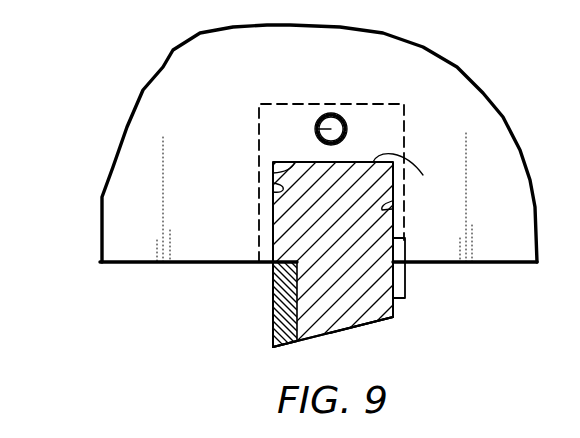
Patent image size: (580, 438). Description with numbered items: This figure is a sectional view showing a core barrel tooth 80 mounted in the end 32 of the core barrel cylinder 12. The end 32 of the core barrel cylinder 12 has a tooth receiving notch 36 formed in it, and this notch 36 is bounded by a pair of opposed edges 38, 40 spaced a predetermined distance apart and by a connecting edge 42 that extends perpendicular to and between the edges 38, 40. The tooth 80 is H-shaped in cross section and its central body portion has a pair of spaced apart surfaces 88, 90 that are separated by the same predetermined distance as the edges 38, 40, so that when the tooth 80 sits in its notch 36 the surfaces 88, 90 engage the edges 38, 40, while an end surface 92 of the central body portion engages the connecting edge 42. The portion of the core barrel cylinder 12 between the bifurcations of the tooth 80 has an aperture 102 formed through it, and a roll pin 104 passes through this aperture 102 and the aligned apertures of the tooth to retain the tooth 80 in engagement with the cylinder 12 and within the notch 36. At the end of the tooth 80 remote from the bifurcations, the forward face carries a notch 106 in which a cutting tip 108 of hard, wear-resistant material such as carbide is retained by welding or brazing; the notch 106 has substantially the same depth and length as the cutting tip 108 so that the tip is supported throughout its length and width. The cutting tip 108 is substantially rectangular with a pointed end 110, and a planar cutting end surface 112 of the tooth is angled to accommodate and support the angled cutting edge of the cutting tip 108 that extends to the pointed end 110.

The core barrel cylinder 12 is at (122, 132).
The end of the core barrel cylinder 32 is at (133, 264).
The tooth receiving notch 36 is at (328, 253).
The opposed edge of the notch 38 is at (273, 184).
The opposed edge of the notch 40 is at (392, 201).
The connecting edge 42 is at (273, 174).
The core barrel tooth 80 is at (421, 96).
The surface of the central body portion 88 is at (273, 225).
The surface of the central body portion 90 is at (406, 236).
The end surface 92 is at (403, 172).
The aperture 102 is at (318, 125).
The roll pin 104 is at (344, 117).
The notch 106 is at (333, 343).
The cutting tip 108 is at (273, 323).
The pointed end 110 is at (273, 348).
The planar cutting end surface 112 is at (350, 330).